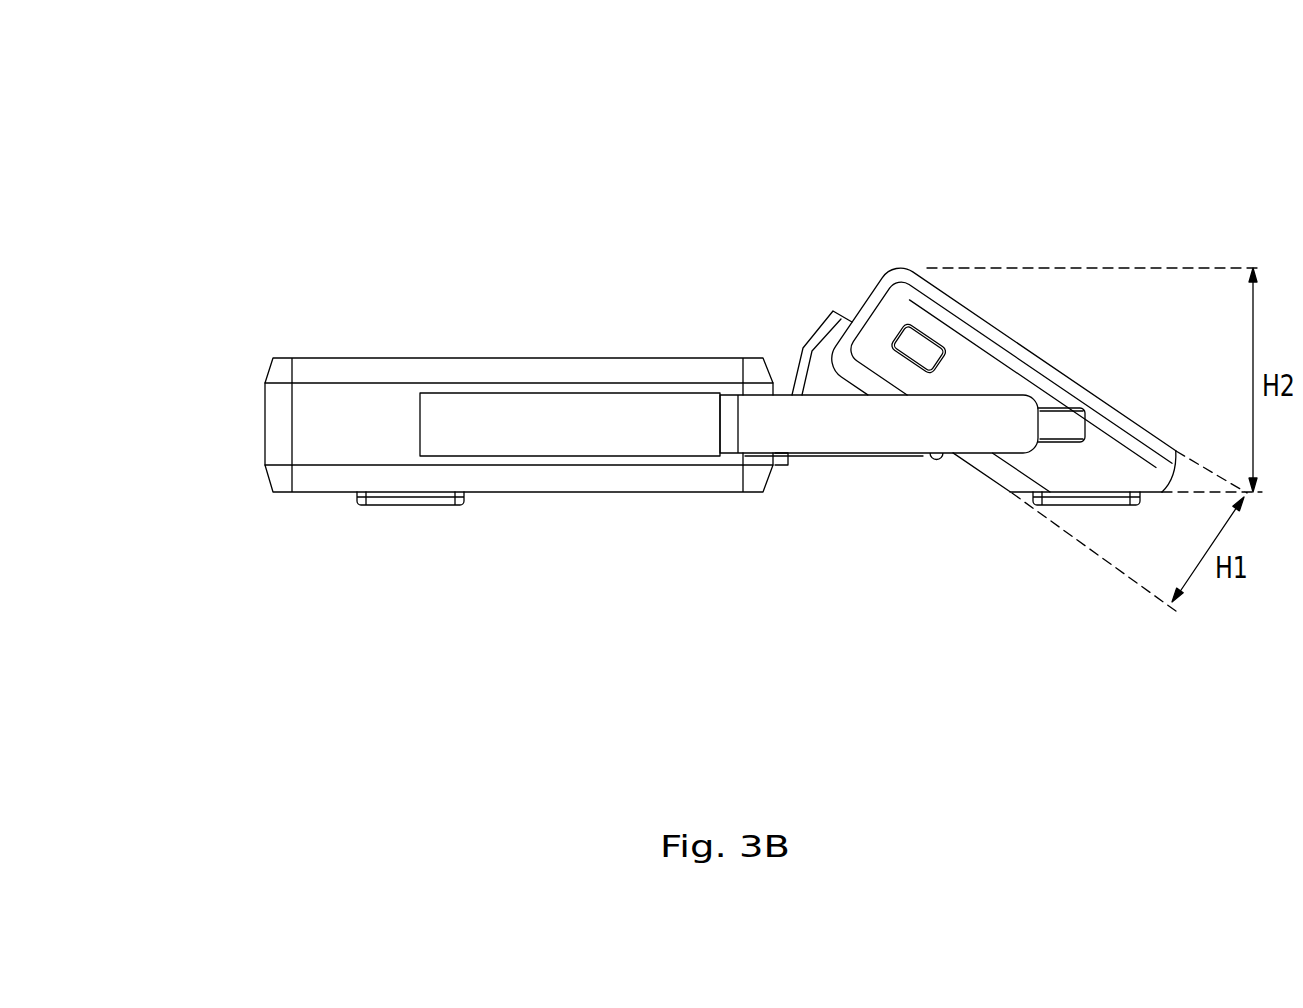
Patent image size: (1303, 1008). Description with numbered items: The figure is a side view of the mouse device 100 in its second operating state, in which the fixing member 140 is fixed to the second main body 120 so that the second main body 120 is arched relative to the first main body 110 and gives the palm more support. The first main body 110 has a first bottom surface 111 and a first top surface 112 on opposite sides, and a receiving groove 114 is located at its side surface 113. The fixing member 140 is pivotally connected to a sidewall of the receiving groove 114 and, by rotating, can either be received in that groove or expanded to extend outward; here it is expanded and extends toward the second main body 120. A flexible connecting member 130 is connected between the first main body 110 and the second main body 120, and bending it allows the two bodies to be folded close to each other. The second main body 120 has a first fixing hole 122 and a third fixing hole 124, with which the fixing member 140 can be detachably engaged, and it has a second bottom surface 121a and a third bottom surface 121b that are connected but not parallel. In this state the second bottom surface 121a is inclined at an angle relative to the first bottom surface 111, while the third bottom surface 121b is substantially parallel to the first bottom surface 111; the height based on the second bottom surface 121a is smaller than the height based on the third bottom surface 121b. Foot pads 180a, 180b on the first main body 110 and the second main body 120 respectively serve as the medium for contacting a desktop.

The mouse device 100 is at (230, 86).
The first main body 110 is at (210, 342).
The first bottom surface 111 is at (317, 492).
The first top surface 112 is at (390, 358).
The side surface 113 is at (300, 424).
The receiving groove 114 is at (547, 444).
The second main body 120 is at (1186, 235).
The second bottom surface 121a is at (980, 474).
The third bottom surface 121b is at (1020, 498).
The first fixing hole 122 is at (895, 334).
The third fixing hole 124 is at (1084, 402).
The flexible connecting member 130 is at (810, 340).
The fixing member 140 is at (828, 440).
The foot pad 180a is at (393, 496).
The foot pad 180b is at (1083, 504).